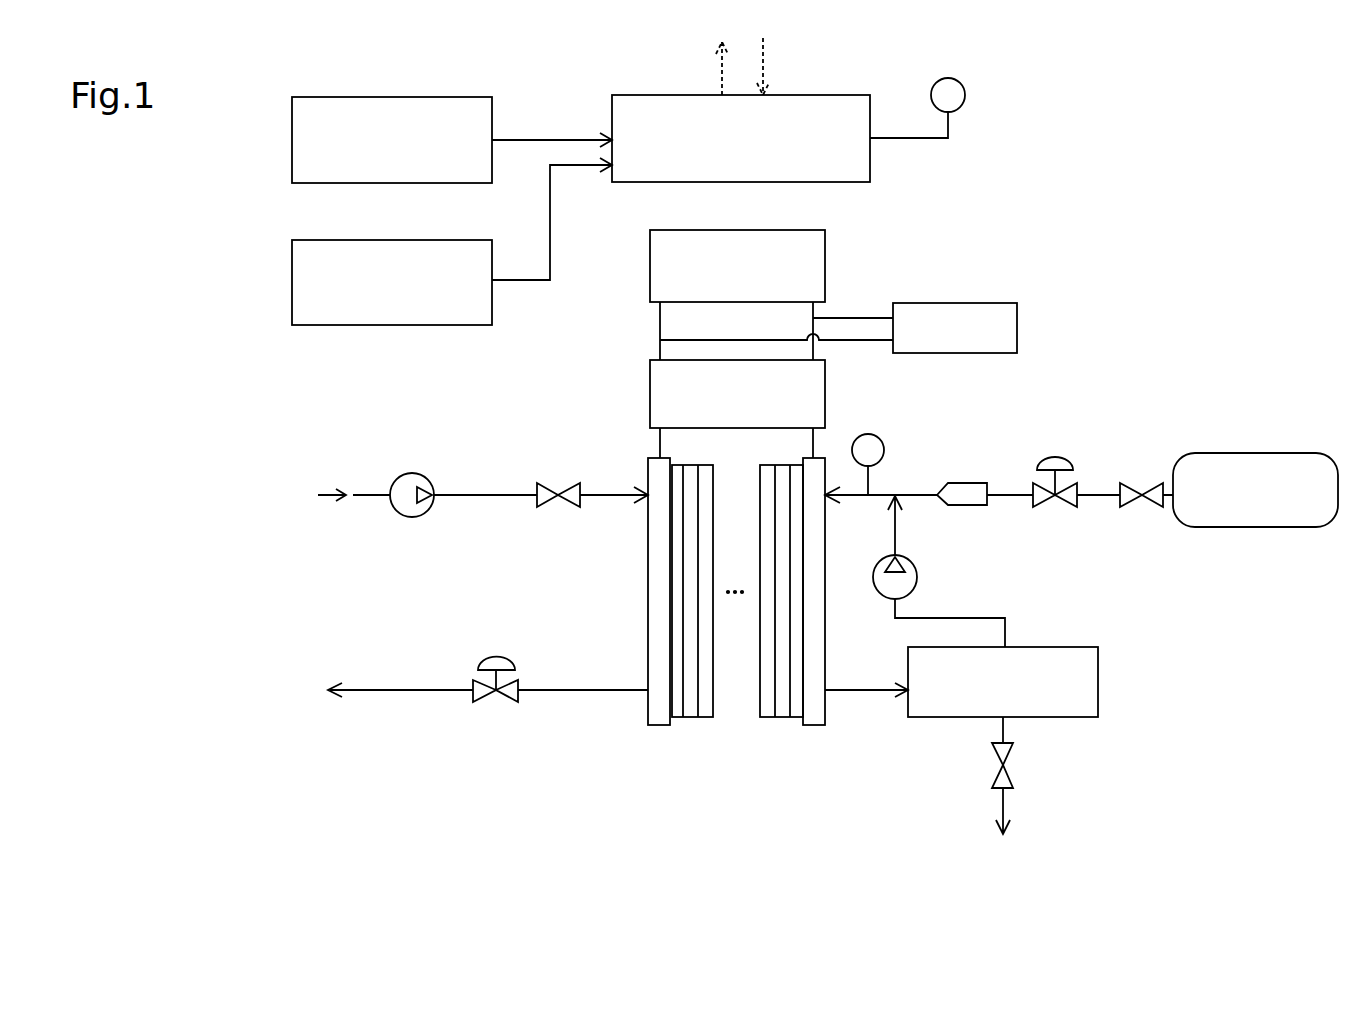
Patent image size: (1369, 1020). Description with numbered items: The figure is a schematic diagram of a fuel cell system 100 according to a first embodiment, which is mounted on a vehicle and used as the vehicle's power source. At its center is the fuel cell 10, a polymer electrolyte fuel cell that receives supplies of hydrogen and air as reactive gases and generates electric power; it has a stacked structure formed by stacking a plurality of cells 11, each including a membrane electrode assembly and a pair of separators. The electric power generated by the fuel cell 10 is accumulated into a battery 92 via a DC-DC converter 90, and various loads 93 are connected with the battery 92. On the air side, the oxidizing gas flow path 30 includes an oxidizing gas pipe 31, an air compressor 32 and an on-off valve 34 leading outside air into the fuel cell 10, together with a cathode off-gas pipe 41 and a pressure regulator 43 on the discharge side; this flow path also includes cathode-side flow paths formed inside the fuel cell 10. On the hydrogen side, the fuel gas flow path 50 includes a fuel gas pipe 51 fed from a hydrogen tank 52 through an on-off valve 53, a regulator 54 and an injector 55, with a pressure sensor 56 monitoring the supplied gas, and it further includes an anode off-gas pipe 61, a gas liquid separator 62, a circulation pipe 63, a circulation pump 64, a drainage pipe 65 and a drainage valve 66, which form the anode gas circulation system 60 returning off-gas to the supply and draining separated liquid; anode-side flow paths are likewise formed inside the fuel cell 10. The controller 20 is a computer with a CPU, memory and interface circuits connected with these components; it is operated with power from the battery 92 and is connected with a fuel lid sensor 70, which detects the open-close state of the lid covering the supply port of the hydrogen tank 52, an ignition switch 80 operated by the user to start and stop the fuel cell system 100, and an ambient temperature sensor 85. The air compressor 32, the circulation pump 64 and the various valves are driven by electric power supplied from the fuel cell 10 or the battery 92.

The fuel cell system 100 is at (1145, 118).
The fuel cell 10 is at (727, 620).
The cell 11 is at (693, 720).
The controller 20 is at (845, 95).
The oxidizing gas flow path 30 is at (428, 455).
The oxidizing gas pipe 31 is at (497, 492).
The air compressor 32 is at (425, 476).
The on-off valve 34 is at (540, 485).
The cathode off-gas pipe 41 is at (382, 688).
The pressure regulator 43 is at (490, 655).
The fuel gas flow path 50 is at (1081, 455).
The fuel gas pipe 51 is at (920, 495).
The hydrogen tank 52 is at (1235, 455).
The on-off valve 53 is at (1128, 480).
The regulator 54 is at (1050, 458).
The injector 55 is at (972, 505).
The pressure sensor 56 is at (885, 452).
The anode gas circulation system 60 is at (1011, 664).
The anode off-gas pipe 61 is at (858, 692).
The gas liquid separator 62 is at (1060, 647).
The circulation pipe 63 is at (925, 618).
The circulation pump 64 is at (915, 565).
The drainage pipe 65 is at (1005, 800).
The drainage valve 66 is at (1003, 775).
The fuel lid sensor 70 is at (430, 97).
The ignition switch 80 is at (430, 240).
The ambient temperature sensor 85 is at (966, 92).
The DC-DC converter 90 is at (825, 390).
The battery 92 is at (825, 262).
The load 93 is at (975, 303).